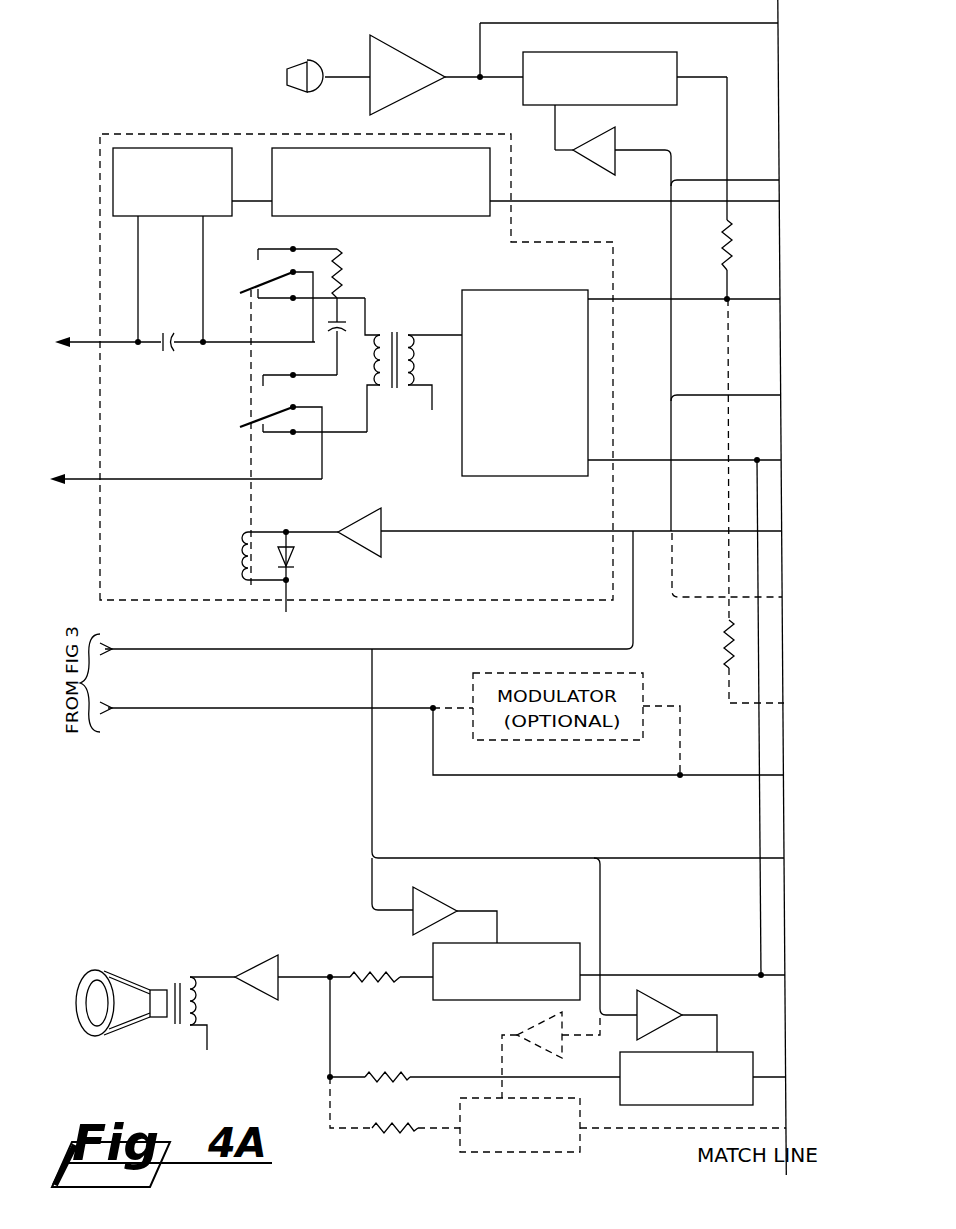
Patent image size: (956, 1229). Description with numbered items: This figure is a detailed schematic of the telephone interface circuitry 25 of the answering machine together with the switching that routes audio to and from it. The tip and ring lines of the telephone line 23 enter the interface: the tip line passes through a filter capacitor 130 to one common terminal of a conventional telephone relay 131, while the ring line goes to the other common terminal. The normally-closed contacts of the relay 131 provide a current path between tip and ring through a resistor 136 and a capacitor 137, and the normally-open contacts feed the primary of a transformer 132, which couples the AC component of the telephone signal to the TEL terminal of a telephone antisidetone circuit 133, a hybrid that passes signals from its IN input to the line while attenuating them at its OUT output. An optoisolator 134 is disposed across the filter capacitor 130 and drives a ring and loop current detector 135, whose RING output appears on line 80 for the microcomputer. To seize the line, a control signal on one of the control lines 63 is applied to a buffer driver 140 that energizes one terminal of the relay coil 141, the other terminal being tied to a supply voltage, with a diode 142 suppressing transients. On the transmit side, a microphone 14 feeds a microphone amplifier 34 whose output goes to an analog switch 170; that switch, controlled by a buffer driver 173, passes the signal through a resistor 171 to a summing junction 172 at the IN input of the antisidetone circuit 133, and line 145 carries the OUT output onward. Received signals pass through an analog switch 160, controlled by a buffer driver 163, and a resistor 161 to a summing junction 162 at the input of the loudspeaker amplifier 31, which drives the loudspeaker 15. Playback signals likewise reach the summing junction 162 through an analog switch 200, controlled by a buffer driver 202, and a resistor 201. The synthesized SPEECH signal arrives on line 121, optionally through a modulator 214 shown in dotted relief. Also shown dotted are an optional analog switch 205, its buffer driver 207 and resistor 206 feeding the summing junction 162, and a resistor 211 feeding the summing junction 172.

The microphone 14 is at (307, 60).
The microphone amplifier 34 is at (405, 52).
The analog switch 170 is at (523, 93).
The buffer driver 173 is at (598, 168).
The line 80 is at (615, 203).
The resistor 171 is at (727, 245).
The summing junction 172 is at (638, 299).
The telephone interface circuitry 25 is at (157, 134).
The optoisolator 134 is at (215, 148).
The ring and loop current detector 135 is at (288, 148).
The telephone line 23 is at (78, 328).
The filter capacitor 130 is at (168, 355).
The telephone relay 131 is at (244, 278).
The resistor 136 is at (344, 262).
The capacitor 137 is at (352, 332).
The transformer 132 is at (397, 325).
The antisidetone circuit 133 is at (498, 288).
The output line 145 is at (645, 460).
The buffer driver 140 is at (373, 510).
The relay coil 141 is at (228, 557).
The diode 142 is at (297, 560).
The control lines 63 is at (306, 652).
The line 121 is at (302, 712).
The resistor 211 is at (723, 628).
The modulator 214 is at (646, 681).
The buffer driver 163 is at (443, 892).
The analog switch 160 is at (555, 943).
The loudspeaker 15 is at (115, 975).
The loudspeaker amplifier 31 is at (259, 956).
The resistor 161 is at (362, 968).
The summing junction 162 is at (330, 1033).
The resistor 201 is at (400, 1068).
The resistor 206 is at (405, 1118).
The buffer driver 207 is at (512, 1016).
The analog switch 205 is at (488, 1155).
The buffer driver 202 is at (678, 1007).
The analog switch 200 is at (742, 1050).